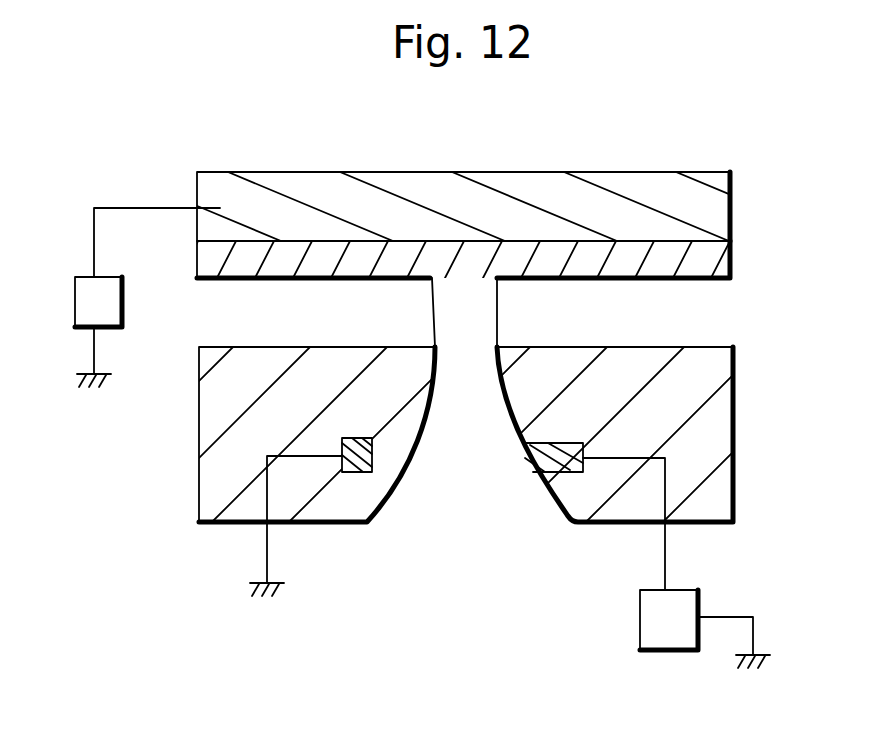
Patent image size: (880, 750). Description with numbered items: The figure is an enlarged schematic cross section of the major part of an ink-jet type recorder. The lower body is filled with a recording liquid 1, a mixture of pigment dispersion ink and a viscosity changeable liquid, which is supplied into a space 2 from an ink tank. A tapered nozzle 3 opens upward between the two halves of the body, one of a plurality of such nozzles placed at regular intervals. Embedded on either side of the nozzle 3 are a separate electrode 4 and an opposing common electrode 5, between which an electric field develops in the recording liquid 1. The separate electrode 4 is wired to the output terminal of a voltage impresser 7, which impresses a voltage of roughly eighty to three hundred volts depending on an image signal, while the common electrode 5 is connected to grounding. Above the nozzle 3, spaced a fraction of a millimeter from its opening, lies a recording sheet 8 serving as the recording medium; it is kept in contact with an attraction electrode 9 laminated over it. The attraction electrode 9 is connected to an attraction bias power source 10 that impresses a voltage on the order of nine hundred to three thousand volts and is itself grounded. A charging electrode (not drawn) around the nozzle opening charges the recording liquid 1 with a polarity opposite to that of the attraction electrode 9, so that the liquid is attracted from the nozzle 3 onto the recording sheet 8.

The recording liquid 1 is at (470, 578).
The space 2 is at (747, 387).
The tapered nozzle 3 is at (470, 409).
The separate electrode 4 is at (560, 473).
The common electrode 5 is at (353, 473).
The voltage impresser 7 is at (683, 602).
The recording sheet 8 is at (710, 263).
The attraction electrode 9 is at (713, 212).
The attraction bias power source 10 is at (90, 305).